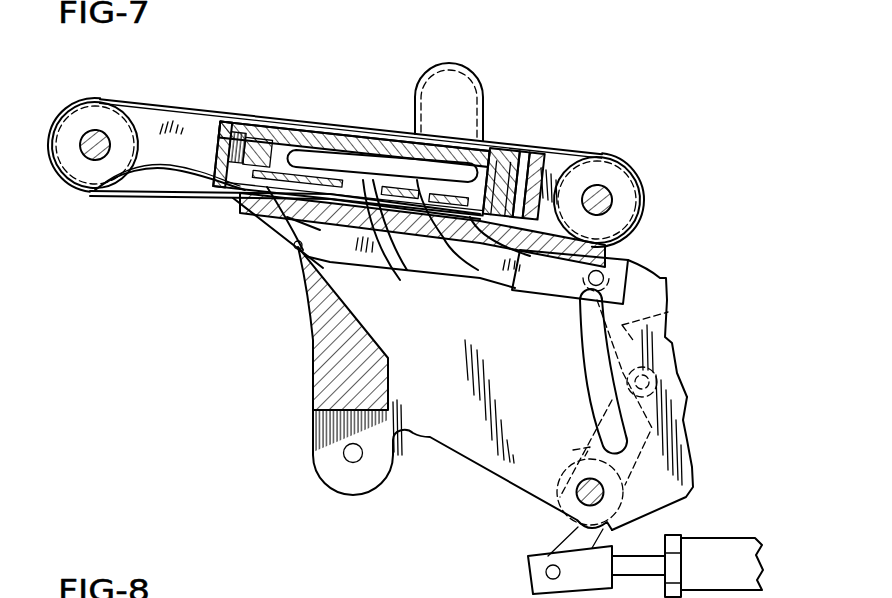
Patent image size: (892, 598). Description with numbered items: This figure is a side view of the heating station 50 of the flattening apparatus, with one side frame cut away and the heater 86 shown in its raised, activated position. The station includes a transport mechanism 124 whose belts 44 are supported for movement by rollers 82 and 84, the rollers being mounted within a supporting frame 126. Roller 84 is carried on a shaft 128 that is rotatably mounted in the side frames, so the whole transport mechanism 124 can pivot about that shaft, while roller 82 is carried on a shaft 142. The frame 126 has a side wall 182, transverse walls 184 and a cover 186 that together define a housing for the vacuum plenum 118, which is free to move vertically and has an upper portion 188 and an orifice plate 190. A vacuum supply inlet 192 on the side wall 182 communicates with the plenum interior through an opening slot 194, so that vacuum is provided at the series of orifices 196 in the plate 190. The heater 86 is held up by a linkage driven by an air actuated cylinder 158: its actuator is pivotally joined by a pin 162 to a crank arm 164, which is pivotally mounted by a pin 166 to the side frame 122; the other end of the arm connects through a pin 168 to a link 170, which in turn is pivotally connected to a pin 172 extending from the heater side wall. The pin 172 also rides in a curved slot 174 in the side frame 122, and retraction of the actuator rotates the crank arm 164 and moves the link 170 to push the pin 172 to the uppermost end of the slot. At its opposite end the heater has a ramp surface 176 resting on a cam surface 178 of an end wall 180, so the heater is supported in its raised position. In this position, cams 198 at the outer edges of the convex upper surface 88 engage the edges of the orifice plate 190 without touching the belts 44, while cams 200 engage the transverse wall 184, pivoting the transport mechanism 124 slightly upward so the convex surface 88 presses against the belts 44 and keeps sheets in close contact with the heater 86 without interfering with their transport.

The heating station 50 is at (500, 44).
The belts 44 is at (172, 196).
The roller 82 is at (614, 178).
The roller 84 is at (80, 165).
The heater 86 is at (335, 256).
The convex upper surface 88 is at (440, 262).
The vacuum plenum 118 is at (313, 140).
The side frame 122 is at (463, 432).
The transport mechanism 124 is at (529, 128).
The supporting frame 126 is at (152, 122).
The shaft 128 is at (95, 140).
The shaft 142 is at (605, 200).
The air actuated cylinder 158 is at (737, 542).
The pin 162 is at (540, 562).
The crank arm 164 is at (689, 441).
The pin 166 is at (578, 480).
The pin 168 is at (646, 384).
The link 170 is at (668, 309).
The pin 172 is at (602, 276).
The curved slot 174 is at (588, 349).
The ramp surface 176 is at (285, 258).
The cam surface 178 is at (296, 252).
The end wall 180 is at (322, 350).
The side wall 182 is at (142, 190).
The transverse walls 184 is at (226, 150).
The cover 186 is at (500, 150).
The upper portion 188 is at (275, 128).
The orifice plate 190 is at (244, 196).
The vacuum supply inlet 192 is at (440, 87).
The opening slot 194 is at (340, 168).
The orifices 196 is at (394, 246).
The cams 198 is at (287, 217).
The cams 200 is at (530, 256).